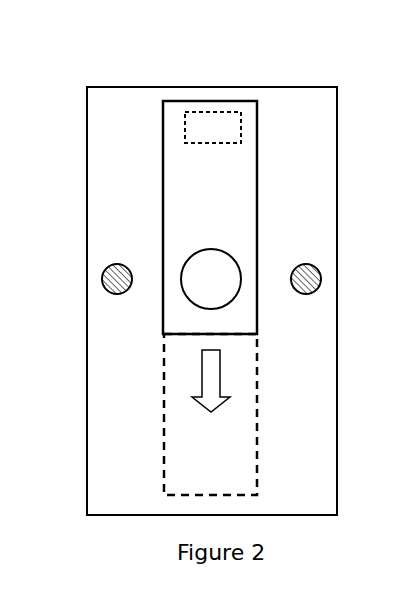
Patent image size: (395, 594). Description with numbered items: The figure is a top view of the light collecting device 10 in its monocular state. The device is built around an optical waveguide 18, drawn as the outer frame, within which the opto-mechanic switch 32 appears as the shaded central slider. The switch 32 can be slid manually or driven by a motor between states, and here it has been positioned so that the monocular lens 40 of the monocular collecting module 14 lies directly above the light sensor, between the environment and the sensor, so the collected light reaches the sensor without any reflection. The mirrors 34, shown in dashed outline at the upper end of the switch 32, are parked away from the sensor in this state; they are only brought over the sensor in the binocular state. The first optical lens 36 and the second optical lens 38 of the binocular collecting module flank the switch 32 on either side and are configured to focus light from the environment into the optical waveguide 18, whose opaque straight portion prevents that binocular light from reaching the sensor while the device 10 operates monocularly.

The light collecting device 10 is at (173, 72).
The monocular collecting module 14 is at (195, 319).
The optical waveguide 18 is at (87, 135).
The opto-mechanic switch 32 is at (218, 190).
The mirrors 34 is at (218, 129).
The first optical lens 36 is at (102, 279).
The second optical lens 38 is at (321, 279).
The monocular lens 40 is at (233, 298).